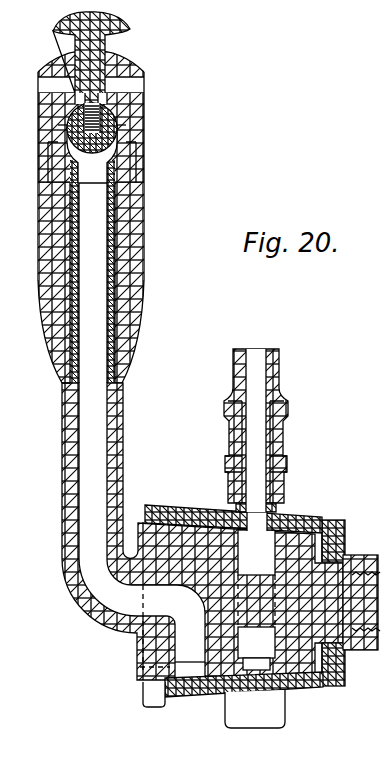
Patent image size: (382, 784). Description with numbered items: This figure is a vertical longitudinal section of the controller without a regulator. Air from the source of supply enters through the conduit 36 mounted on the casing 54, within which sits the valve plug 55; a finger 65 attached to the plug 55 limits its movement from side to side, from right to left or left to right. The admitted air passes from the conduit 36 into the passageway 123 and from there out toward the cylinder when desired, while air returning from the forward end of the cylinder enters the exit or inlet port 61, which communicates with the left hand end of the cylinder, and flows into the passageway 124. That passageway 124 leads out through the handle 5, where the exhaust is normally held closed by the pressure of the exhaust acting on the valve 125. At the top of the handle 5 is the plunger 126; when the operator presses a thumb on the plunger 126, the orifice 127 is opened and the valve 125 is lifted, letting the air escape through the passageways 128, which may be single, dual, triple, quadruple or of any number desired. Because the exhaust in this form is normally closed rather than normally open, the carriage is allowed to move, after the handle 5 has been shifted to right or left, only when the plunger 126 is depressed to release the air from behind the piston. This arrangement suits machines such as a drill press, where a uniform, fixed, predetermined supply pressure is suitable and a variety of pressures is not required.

The handle 5 is at (138, 246).
The conduit 36 is at (258, 368).
The casing 54 is at (295, 510).
The valve plug 55 is at (170, 532).
The exit or inlet port 61 is at (267, 720).
The finger 65 is at (145, 697).
The passageway 123 is at (248, 544).
The passageway 124 is at (192, 647).
The valve 125 is at (130, 115).
The plunger 126 is at (130, 21).
The orifice 127 is at (102, 101).
The passageways 128 is at (44, 83).